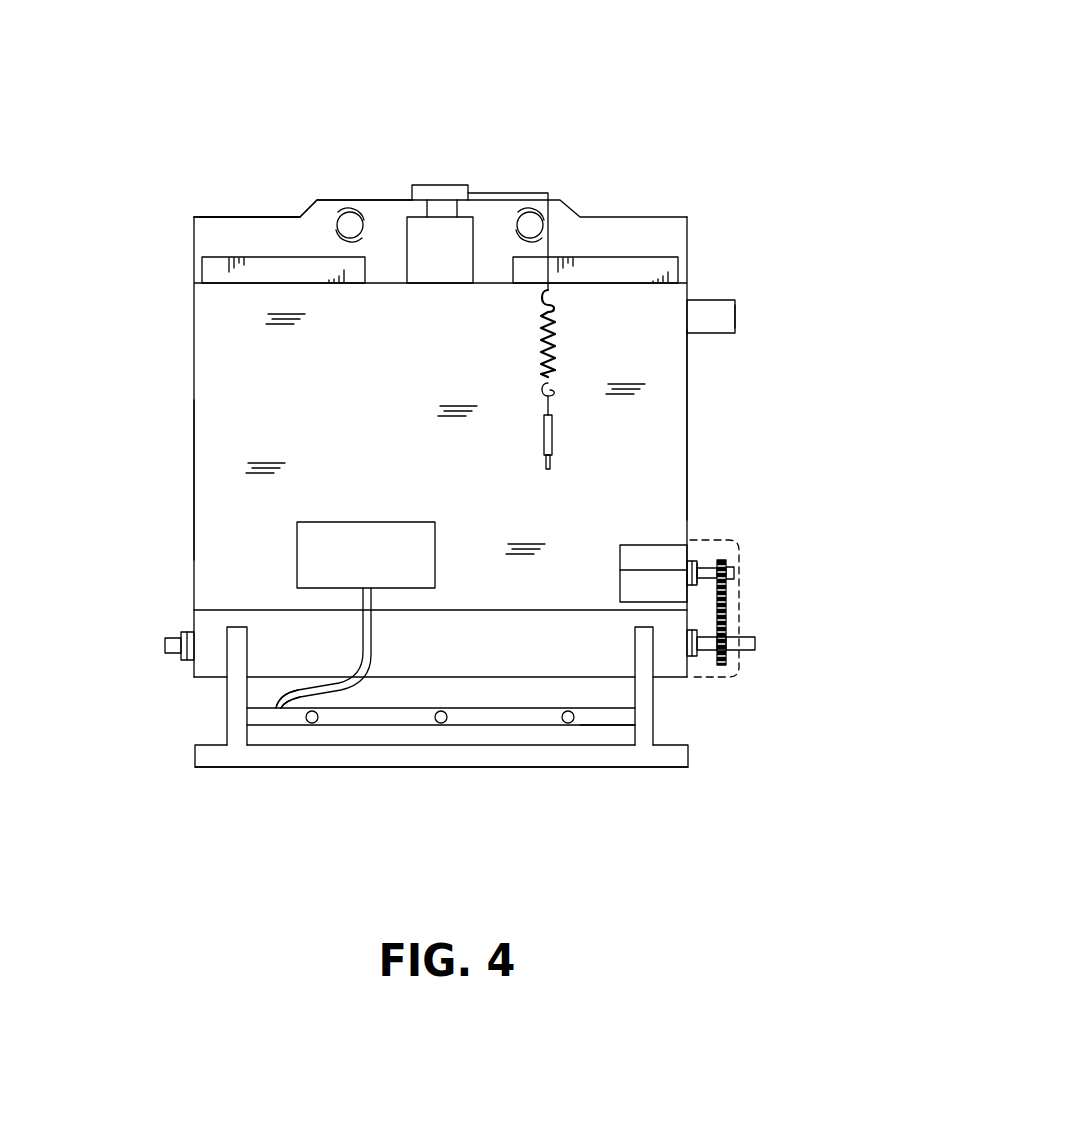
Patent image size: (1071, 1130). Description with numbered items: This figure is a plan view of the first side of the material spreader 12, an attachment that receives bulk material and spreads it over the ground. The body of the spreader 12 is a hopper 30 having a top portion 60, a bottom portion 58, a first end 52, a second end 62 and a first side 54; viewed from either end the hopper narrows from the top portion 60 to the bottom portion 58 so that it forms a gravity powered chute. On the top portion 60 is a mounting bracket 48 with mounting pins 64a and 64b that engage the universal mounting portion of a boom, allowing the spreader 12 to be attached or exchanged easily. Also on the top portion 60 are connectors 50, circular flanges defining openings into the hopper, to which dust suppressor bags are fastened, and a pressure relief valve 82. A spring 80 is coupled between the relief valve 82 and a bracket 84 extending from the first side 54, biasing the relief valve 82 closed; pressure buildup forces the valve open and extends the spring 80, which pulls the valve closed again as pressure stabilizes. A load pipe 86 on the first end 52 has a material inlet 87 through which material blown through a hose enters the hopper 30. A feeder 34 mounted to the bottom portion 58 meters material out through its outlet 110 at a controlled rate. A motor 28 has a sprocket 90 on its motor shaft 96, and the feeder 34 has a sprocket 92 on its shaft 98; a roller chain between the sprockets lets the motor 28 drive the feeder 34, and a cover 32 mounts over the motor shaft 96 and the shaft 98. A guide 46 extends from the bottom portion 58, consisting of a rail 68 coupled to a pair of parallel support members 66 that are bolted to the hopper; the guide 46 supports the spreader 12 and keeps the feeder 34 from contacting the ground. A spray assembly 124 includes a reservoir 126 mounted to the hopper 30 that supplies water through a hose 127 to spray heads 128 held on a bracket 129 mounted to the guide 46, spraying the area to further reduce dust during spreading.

The spreader 12 is at (672, 110).
The motor 28 is at (645, 553).
The hopper 30 is at (218, 368).
The cover 32 is at (739, 550).
The feeder 34 is at (278, 620).
The guide 46 is at (188, 763).
The mounting bracket 48 is at (238, 228).
The connector 50 is at (215, 269).
The first end 52 is at (690, 378).
The first side 54 is at (456, 386).
The bottom portion 58 is at (150, 622).
The top portion 60 is at (158, 233).
The second end 62 is at (194, 447).
The mounting pin 64a is at (350, 215).
The mounting pin 64b is at (530, 215).
The support member 66 is at (232, 725).
The rail 68 is at (276, 758).
The spring 80 is at (556, 350).
The pressure relief valve 82 is at (447, 185).
The bracket 84 is at (546, 468).
The load pipe 86 is at (715, 300).
The material inlet 87 is at (743, 313).
The sprocket 90 is at (727, 583).
The sprocket 92 is at (727, 633).
The motor shaft 96 is at (703, 568).
The shaft 98 is at (755, 643).
The outlet 110 is at (458, 682).
The spray assembly 124 is at (272, 693).
The reservoir 126 is at (364, 522).
The hose 127 is at (372, 636).
The spray head 128 is at (438, 723).
The bracket 129 is at (605, 720).